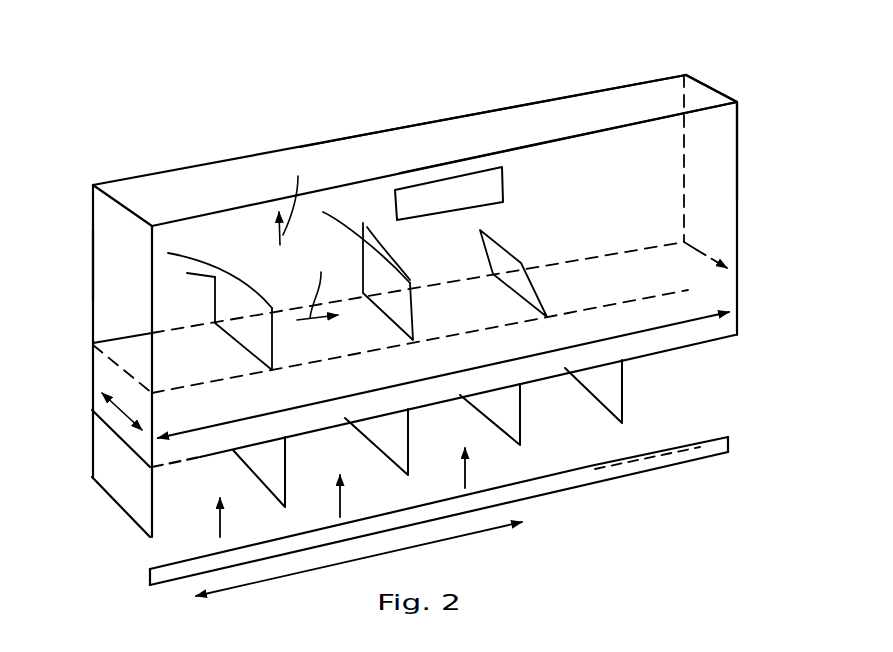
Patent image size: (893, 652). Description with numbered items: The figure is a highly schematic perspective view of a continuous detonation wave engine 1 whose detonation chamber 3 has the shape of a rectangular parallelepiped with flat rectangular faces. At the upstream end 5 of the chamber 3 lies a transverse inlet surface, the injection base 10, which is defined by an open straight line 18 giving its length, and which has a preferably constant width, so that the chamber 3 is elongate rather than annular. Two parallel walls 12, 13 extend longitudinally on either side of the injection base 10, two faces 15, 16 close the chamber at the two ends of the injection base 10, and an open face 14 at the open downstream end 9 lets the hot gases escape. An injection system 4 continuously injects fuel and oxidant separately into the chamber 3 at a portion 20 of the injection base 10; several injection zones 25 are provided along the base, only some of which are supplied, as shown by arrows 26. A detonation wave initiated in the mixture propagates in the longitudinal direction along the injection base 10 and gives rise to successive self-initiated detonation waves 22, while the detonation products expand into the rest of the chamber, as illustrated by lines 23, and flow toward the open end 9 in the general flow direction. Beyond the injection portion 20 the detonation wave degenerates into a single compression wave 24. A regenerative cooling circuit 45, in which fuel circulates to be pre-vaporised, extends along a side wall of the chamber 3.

The continuous detonation wave engine 1 is at (126, 155).
The detonation chamber 3 is at (93, 233).
The injection system 4 is at (607, 477).
The upstream end 5 is at (693, 355).
The open downstream end 9 is at (644, 76).
The injection base 10 is at (695, 292).
The wall 12 is at (717, 163).
The wall 13 is at (492, 110).
The open face 14 is at (396, 127).
The end face 15 is at (104, 292).
The end face 16 is at (748, 138).
The line 18 is at (702, 278).
The injection portion 20 is at (302, 572).
The successive detonation waves 22 is at (238, 280).
The expansion lines 23 is at (207, 271).
The compression wave 24 is at (500, 247).
The injection zones 25 is at (172, 517).
The supply arrows 26 is at (337, 502).
The cooling circuit 45 is at (452, 178).